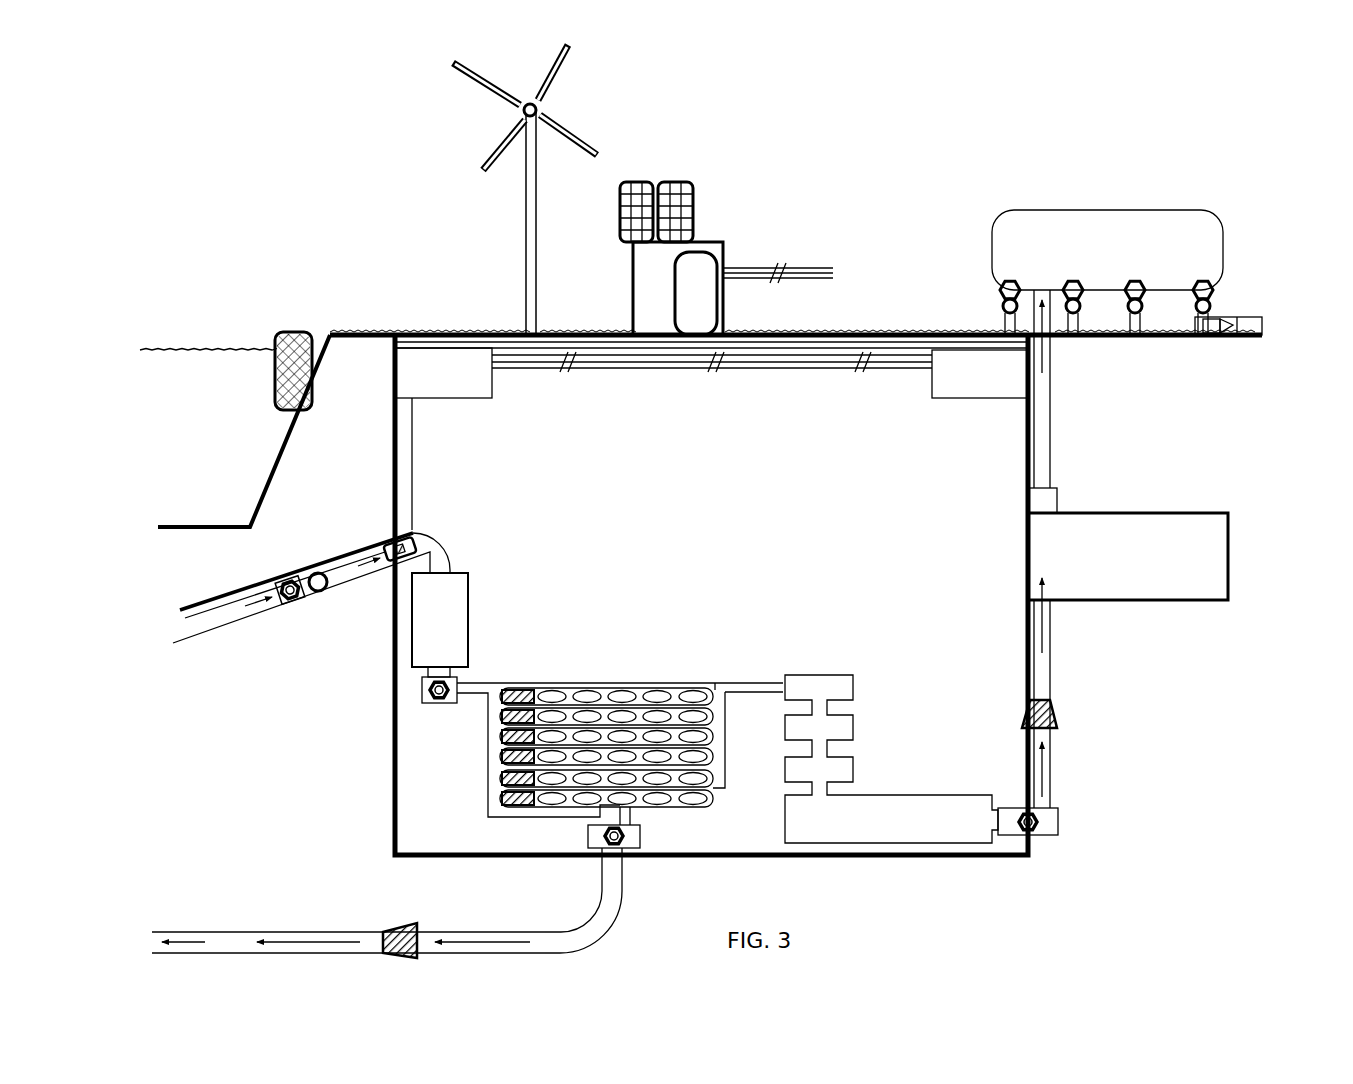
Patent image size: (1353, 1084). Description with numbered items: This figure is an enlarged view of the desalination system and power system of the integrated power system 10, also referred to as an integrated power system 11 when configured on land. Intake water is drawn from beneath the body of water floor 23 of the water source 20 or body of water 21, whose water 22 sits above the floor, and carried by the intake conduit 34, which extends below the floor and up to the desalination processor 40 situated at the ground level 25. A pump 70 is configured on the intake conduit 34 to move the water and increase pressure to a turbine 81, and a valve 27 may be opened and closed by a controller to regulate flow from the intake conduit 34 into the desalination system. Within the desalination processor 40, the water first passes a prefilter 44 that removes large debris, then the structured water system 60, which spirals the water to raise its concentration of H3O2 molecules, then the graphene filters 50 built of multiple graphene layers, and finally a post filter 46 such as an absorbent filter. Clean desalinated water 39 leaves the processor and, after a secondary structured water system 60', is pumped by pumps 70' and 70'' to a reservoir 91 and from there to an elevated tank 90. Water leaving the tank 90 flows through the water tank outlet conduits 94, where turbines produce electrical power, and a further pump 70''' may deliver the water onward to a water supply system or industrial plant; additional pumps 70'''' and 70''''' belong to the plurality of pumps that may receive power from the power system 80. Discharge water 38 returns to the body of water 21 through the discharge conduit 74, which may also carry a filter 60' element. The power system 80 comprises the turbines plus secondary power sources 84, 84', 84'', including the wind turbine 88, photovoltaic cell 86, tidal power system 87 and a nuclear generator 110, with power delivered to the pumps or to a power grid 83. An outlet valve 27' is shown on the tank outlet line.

The integrated power system 10 is at (393, 212).
The integrated power system 11 is at (679, 182).
The water source 20 is at (214, 405).
The body of water 21 is at (162, 354).
The water 22 is at (212, 346).
The body of water floor 23 is at (172, 523).
The ground level 25 is at (425, 333).
The valve 27 is at (380, 532).
The outlet valve 27' is at (1228, 358).
The intake conduit 34 is at (225, 620).
The discharge water 38 is at (228, 940).
The desalinated water 39 is at (1044, 680).
The desalination processor 40 is at (786, 666).
The prefilter 44 is at (445, 605).
The post filter 46 is at (830, 690).
The graphene filters 50 is at (585, 690).
The structured water system 60 is at (522, 708).
The secondary structured water system 60' is at (720, 815).
The pump 70 is at (276, 612).
The pump 70' is at (395, 697).
The pump 70'' is at (652, 832).
The pump 70''' is at (1074, 811).
The pump 70'''' is at (1077, 465).
The pump 70''''' is at (1165, 264).
The discharge conduit 74 is at (545, 942).
The power system 80 is at (744, 158).
The turbine 81 is at (1000, 297).
The power grid 83 is at (828, 270).
The secondary power source 84 is at (518, 190).
The secondary power source 84' is at (651, 186).
The secondary power source 84'' is at (568, 288).
The photovoltaic cell 86 is at (700, 194).
The tidal power system 87 is at (293, 330).
The wind turbine 88 is at (540, 108).
The tank 90 is at (1050, 262).
The reservoir 91 is at (1125, 548).
The water tank outlet conduits 94 is at (1078, 320).
The nuclear generator 110 is at (710, 252).